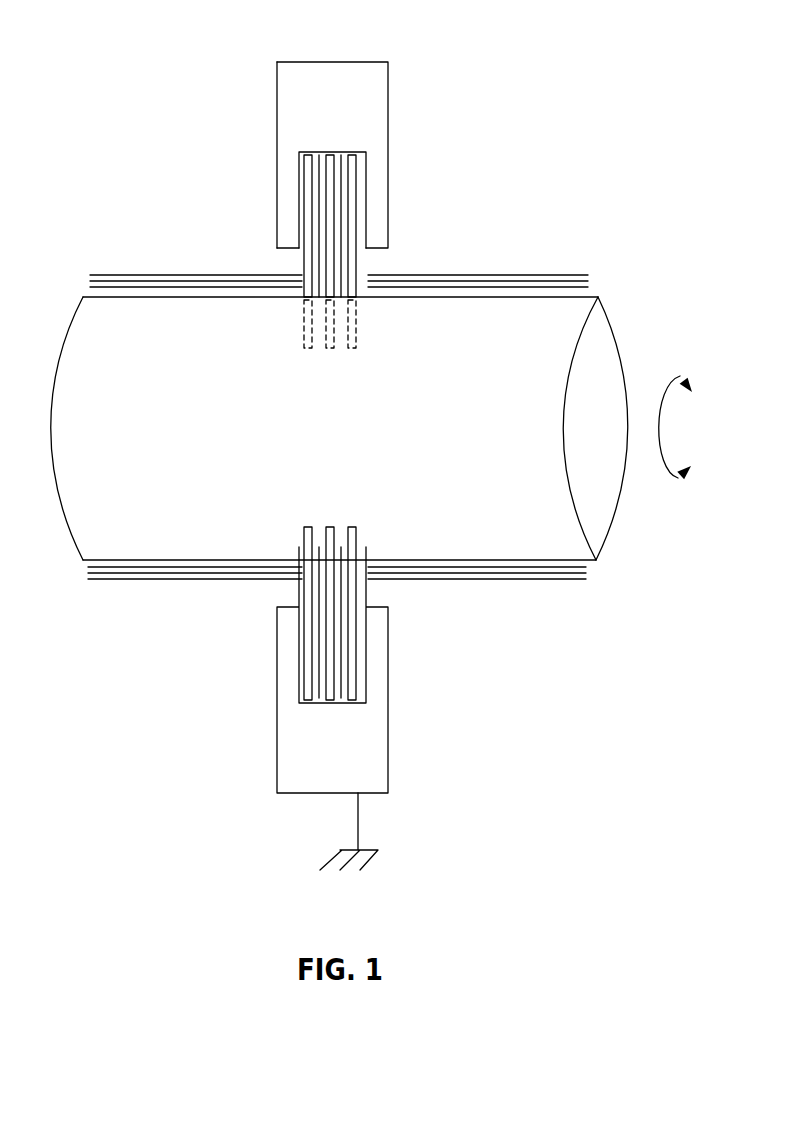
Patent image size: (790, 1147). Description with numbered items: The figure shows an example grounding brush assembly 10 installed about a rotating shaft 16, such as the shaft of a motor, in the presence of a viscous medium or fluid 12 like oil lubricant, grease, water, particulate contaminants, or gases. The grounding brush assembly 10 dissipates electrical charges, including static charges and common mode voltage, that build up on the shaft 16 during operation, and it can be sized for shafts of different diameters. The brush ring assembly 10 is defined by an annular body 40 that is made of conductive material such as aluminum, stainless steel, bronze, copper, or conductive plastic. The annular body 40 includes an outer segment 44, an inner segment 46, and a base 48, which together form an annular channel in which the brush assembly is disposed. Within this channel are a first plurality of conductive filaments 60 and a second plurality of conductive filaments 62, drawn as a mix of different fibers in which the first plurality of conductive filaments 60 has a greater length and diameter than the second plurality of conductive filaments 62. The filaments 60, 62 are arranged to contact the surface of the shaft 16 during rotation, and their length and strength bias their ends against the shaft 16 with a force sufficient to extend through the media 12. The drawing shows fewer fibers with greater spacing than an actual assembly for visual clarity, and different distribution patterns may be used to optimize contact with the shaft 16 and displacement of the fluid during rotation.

The grounding brush assembly 10 is at (220, 98).
The viscous medium or fluid 12 is at (130, 262).
The shaft 16 is at (606, 312).
The annular body 40 is at (345, 52).
The outer segment 44 is at (388, 200).
The inner segment 46 is at (277, 200).
The base 48 is at (388, 80).
The first plurality of conductive filaments 60 is at (304, 272).
The second plurality of conductive filaments 62 is at (362, 266).